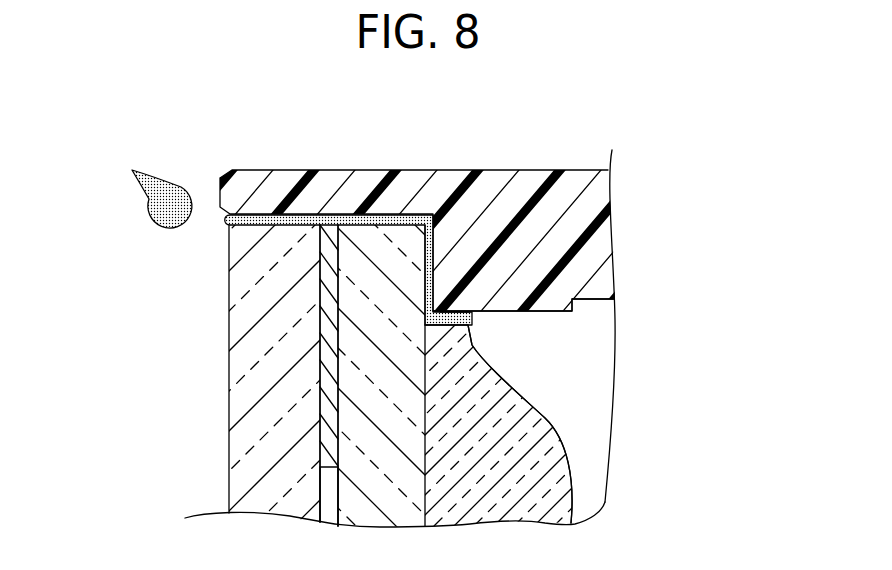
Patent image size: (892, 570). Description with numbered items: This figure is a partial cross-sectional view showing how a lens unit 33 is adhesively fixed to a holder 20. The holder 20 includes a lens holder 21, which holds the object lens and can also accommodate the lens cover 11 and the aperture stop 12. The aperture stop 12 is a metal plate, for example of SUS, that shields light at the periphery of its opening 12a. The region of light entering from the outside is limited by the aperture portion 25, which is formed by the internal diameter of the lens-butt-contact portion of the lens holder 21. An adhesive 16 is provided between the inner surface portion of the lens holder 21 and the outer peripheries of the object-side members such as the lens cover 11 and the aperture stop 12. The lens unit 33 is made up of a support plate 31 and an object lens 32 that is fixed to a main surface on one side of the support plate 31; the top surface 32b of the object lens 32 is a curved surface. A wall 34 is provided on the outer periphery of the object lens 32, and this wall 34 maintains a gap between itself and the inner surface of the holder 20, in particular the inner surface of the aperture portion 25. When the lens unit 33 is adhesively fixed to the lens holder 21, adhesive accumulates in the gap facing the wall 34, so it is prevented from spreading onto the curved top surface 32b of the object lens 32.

The lens cover 11 is at (254, 348).
The aperture stop 12 is at (325, 292).
The opening 12a is at (326, 492).
The adhesive 16 is at (172, 190).
The holder 20 is at (485, 190).
The lens holder 21 is at (325, 190).
The aperture portion 25 is at (535, 313).
The support plate 31 is at (407, 476).
The object lens 32 is at (525, 435).
The top surface 32b is at (508, 388).
The lens unit 33 is at (415, 375).
The wall 34 is at (457, 312).